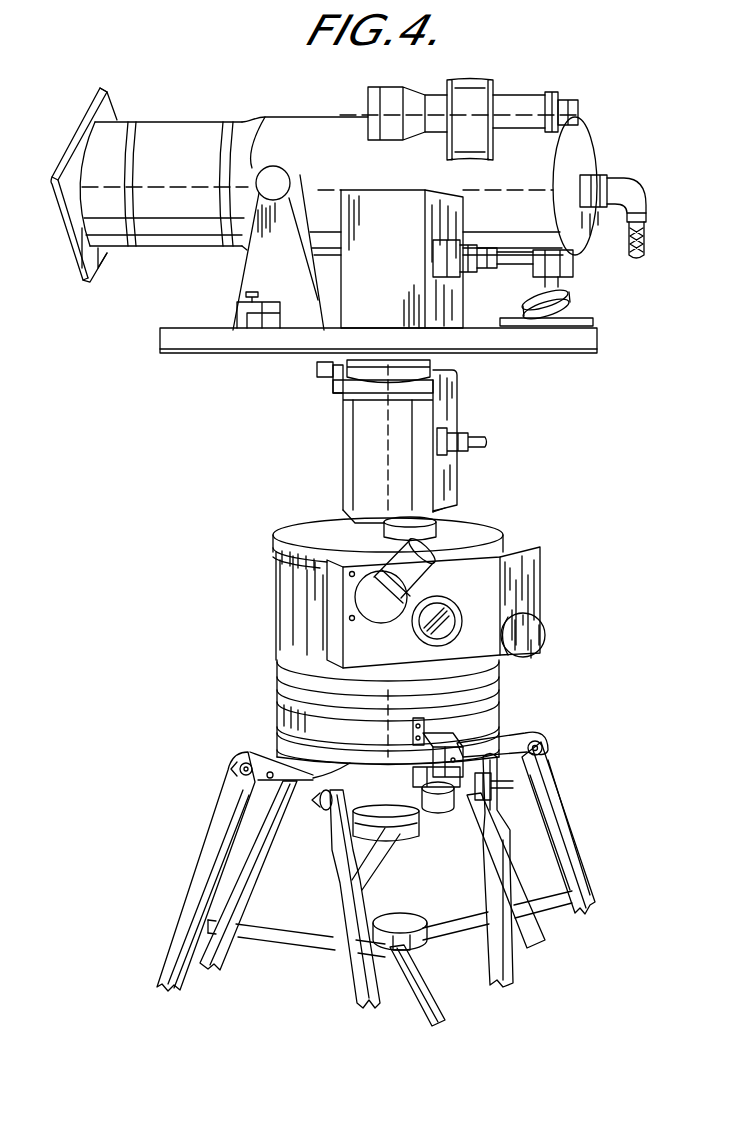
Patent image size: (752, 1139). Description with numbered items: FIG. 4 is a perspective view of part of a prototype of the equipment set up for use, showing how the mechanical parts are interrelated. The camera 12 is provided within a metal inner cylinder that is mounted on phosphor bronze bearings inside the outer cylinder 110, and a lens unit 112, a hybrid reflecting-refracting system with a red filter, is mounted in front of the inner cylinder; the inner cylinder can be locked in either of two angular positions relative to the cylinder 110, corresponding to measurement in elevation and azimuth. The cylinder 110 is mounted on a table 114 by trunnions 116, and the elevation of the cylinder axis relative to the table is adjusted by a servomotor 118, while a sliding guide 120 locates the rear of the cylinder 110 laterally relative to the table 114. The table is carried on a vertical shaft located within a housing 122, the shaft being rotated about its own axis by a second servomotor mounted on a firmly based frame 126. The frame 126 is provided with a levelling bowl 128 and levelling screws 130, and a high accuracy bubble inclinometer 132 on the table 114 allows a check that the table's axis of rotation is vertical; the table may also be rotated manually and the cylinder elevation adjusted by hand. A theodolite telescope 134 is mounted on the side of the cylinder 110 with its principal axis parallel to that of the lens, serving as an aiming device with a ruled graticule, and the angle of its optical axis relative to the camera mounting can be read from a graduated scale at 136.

The camera 12 is at (314, 114).
The outer cylinder 110 is at (548, 182).
The lens unit 112 is at (84, 286).
The table 114 is at (272, 340).
The trunnions 116 is at (258, 272).
The servomotor 118 is at (400, 267).
The sliding guide 120 is at (560, 309).
The housing 122 is at (353, 413).
The frame 126 is at (219, 800).
The levelling bowl 128 is at (285, 680).
The levelling screws 130 is at (432, 806).
The bubble inclinometer 132 is at (250, 322).
The theodolite telescope 134 is at (552, 81).
The graduated scale 136 is at (438, 542).